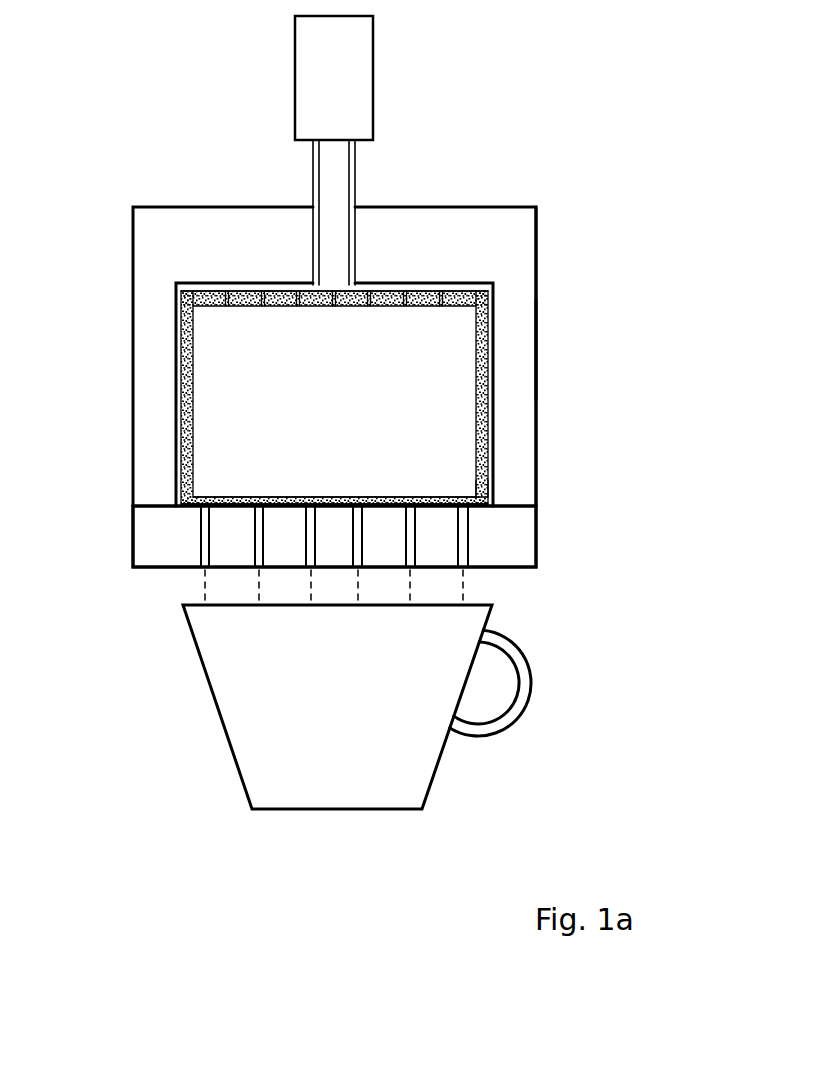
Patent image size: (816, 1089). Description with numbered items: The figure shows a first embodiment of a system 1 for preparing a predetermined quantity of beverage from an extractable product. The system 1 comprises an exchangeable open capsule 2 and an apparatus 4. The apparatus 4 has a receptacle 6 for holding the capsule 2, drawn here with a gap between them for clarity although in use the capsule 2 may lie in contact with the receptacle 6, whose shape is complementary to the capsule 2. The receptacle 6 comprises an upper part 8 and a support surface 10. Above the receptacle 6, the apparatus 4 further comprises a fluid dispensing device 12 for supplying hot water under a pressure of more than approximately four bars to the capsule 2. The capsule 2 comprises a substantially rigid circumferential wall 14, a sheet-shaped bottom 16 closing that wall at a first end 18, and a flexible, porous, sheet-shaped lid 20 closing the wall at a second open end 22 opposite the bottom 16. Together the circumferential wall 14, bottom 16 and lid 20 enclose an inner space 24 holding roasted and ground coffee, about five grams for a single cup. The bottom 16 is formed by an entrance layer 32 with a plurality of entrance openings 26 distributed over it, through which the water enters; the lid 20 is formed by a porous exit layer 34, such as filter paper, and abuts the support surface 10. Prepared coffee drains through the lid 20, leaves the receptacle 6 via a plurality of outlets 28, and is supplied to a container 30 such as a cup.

The system 1 is at (598, 512).
The exchangeable open capsule 2 is at (488, 397).
The apparatus 4 is at (600, 238).
The receptacle 6 is at (537, 355).
The upper part 8 is at (537, 290).
The support surface 10 is at (467, 508).
The fluid dispensing device 12 is at (375, 58).
The circumferential wall 14 is at (488, 430).
The bottom 16 is at (459, 292).
The first end 18 is at (490, 328).
The lid 20 is at (450, 500).
The second open end 22 is at (487, 497).
The inner space 24 is at (247, 423).
The entrance openings 26 is at (298, 307).
The outlets 28 is at (258, 558).
The container 30 is at (437, 768).
The entrance layer 32 is at (473, 293).
The exit layer 34 is at (460, 503).